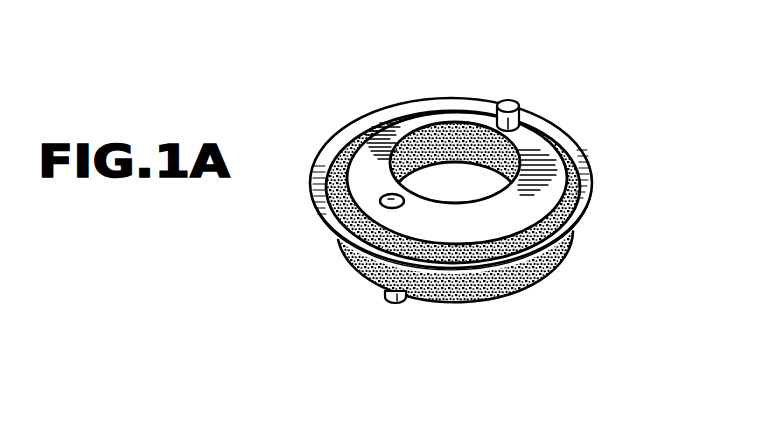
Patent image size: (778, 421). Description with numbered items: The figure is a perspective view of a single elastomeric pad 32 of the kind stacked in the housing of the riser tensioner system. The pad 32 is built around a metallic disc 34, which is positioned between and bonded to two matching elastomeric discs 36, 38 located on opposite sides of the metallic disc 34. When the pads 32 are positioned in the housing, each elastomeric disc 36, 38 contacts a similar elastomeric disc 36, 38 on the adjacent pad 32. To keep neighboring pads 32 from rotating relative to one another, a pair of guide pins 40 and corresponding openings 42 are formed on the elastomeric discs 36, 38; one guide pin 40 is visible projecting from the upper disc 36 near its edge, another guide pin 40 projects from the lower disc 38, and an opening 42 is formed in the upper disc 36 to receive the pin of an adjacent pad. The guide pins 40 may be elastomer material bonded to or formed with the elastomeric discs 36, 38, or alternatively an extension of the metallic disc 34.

The elastomeric pad 32 is at (574, 170).
The metallic disc 34 is at (310, 207).
The elastomeric disc 36 is at (539, 143).
The elastomeric disc 38 is at (503, 293).
The guide pin 40 is at (508, 98).
The opening 42 is at (387, 195).